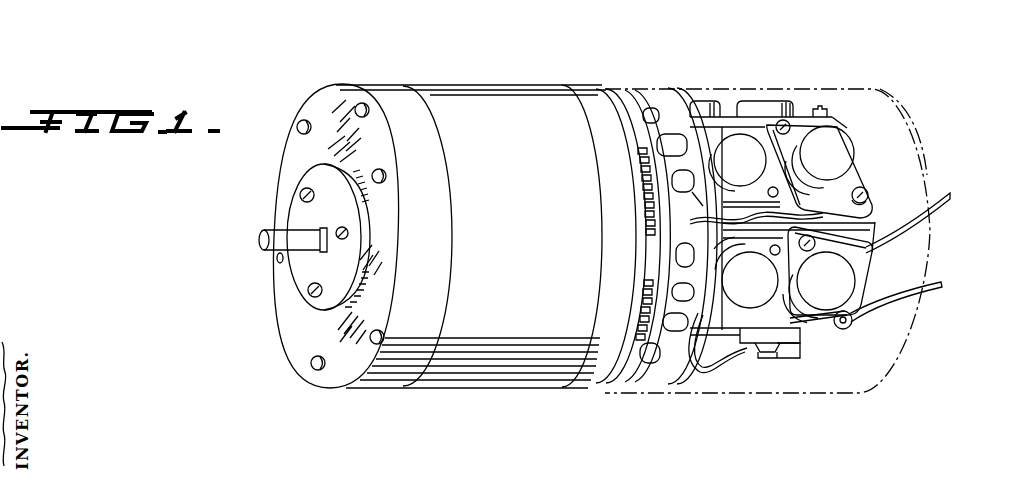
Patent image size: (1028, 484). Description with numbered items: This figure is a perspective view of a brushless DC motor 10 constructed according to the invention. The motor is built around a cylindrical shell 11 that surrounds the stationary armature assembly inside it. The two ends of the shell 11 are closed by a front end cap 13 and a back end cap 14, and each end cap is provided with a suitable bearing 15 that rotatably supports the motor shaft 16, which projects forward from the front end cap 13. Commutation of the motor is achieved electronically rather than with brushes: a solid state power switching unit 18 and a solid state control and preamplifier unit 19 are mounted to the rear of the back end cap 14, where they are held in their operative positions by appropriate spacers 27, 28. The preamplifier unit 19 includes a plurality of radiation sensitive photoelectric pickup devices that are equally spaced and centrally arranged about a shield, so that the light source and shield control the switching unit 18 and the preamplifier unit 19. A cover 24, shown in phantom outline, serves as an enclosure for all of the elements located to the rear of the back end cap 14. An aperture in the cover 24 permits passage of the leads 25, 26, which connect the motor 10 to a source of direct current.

The brushless DC motor 10 is at (721, 70).
The shell 11 is at (476, 391).
The front end cap 13 is at (378, 390).
The back end cap 14 is at (570, 392).
The bearing 15 is at (324, 264).
The motor shaft 16 is at (264, 246).
The solid state power switching unit 18 is at (728, 116).
The solid state control and preamplifier unit 19 is at (642, 94).
The cover 24 is at (917, 152).
The lead 25 is at (897, 233).
The lead 26 is at (881, 306).
The spacer 27 is at (643, 289).
The spacer 28 is at (702, 331).